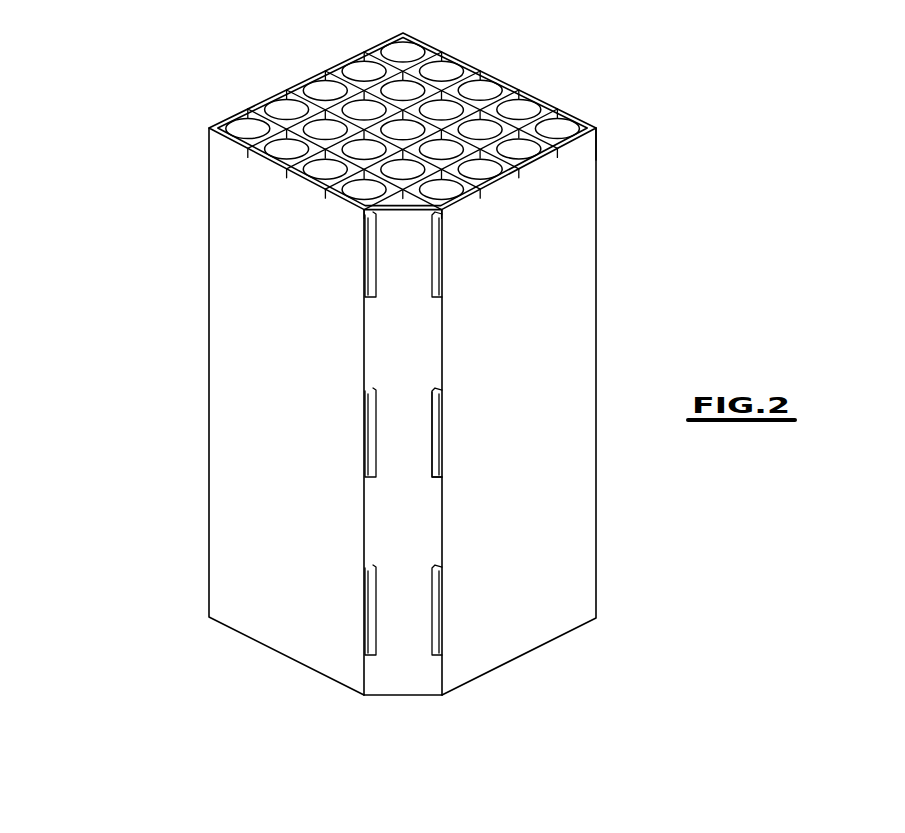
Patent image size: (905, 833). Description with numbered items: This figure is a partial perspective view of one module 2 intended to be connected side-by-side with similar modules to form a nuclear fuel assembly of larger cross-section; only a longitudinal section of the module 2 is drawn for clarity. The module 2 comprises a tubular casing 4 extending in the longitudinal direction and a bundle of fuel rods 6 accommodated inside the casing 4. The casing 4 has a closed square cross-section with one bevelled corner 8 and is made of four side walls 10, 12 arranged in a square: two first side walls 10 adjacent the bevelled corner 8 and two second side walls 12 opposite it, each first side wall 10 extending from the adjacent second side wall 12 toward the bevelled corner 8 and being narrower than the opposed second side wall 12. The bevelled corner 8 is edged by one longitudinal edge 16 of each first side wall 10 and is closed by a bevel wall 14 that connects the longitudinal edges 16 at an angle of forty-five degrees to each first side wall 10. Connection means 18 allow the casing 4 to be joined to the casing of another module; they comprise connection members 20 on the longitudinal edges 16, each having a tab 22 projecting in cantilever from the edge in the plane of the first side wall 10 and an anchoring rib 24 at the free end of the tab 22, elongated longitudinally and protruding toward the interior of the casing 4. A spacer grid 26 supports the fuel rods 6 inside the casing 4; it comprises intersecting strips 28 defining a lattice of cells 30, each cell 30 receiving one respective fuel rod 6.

The module 2 is at (135, 152).
The tubular casing 4 is at (228, 108).
The fuel rods 6 is at (360, 78).
The bevelled corner 8 is at (403, 502).
The first side wall 10 is at (228, 278).
The second side wall 12 is at (300, 90).
The bevel wall 14 is at (395, 352).
The longitudinal edge 16 is at (446, 352).
The connection means 18 is at (453, 435).
The connection member 20 is at (452, 245).
The tab 22 is at (444, 226).
The anchoring rib 24 is at (440, 262).
The spacer grid 26 is at (597, 122).
The intersecting strips 28 is at (434, 88).
The cell 30 is at (507, 85).